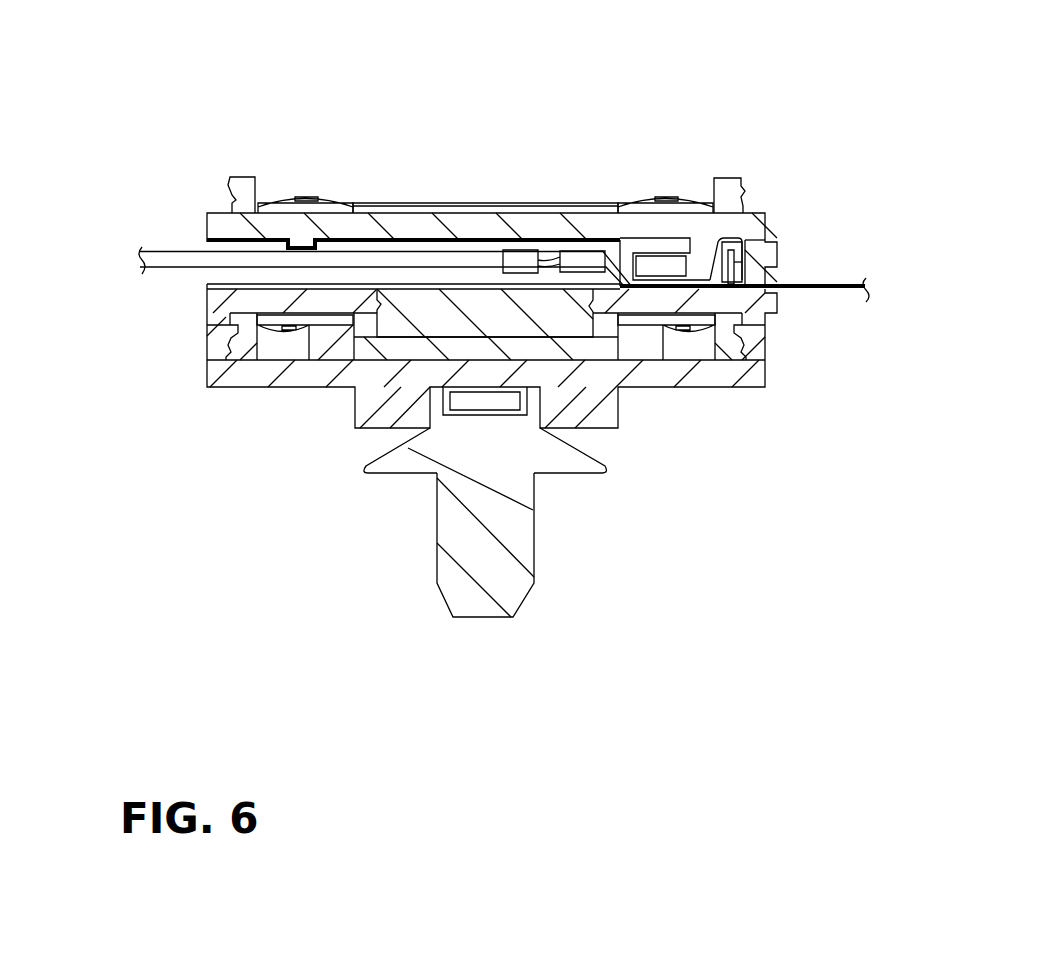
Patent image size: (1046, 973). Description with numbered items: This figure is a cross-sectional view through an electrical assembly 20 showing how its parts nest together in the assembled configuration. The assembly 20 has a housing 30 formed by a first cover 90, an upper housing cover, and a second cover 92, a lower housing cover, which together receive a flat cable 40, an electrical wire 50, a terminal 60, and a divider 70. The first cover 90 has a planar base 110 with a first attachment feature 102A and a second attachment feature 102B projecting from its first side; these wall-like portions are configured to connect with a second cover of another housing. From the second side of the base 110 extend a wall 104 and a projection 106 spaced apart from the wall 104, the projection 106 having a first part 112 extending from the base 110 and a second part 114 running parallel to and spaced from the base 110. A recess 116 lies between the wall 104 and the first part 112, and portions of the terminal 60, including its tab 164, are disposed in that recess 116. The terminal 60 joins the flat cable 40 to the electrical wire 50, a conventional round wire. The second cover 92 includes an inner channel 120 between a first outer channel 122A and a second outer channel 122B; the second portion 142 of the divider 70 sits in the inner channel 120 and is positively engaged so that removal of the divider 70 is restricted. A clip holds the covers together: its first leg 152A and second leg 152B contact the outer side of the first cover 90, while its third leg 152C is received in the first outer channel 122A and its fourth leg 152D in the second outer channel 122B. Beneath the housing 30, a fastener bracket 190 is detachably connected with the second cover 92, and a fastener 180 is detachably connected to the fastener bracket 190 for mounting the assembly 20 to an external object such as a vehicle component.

The electrical assembly 20 is at (122, 121).
The housing 30 is at (482, 259).
The first cover 90 is at (222, 223).
The second cover 92 is at (243, 298).
The flat cable 40 is at (813, 293).
The electrical wire 50 is at (185, 258).
The terminal 60 is at (745, 268).
The divider 70 is at (393, 310).
The first attachment feature 102A is at (726, 180).
The second attachment feature 102B is at (251, 187).
The wall 104 is at (755, 225).
The projection 106 is at (648, 263).
The base 110 is at (453, 212).
The first part 112 is at (703, 250).
The second part 114 is at (670, 268).
The recess 116 is at (728, 236).
The inner channel 120 is at (442, 310).
The first outer channel 122A is at (633, 330).
The second outer channel 122B is at (273, 341).
The second portion 142 is at (459, 343).
The first leg 152A is at (660, 197).
The second leg 152B is at (300, 197).
The third leg 152C is at (678, 327).
The fourth leg 152D is at (282, 332).
The tab 164 is at (742, 263).
The fastener 180 is at (534, 513).
The fastener bracket 190 is at (598, 392).